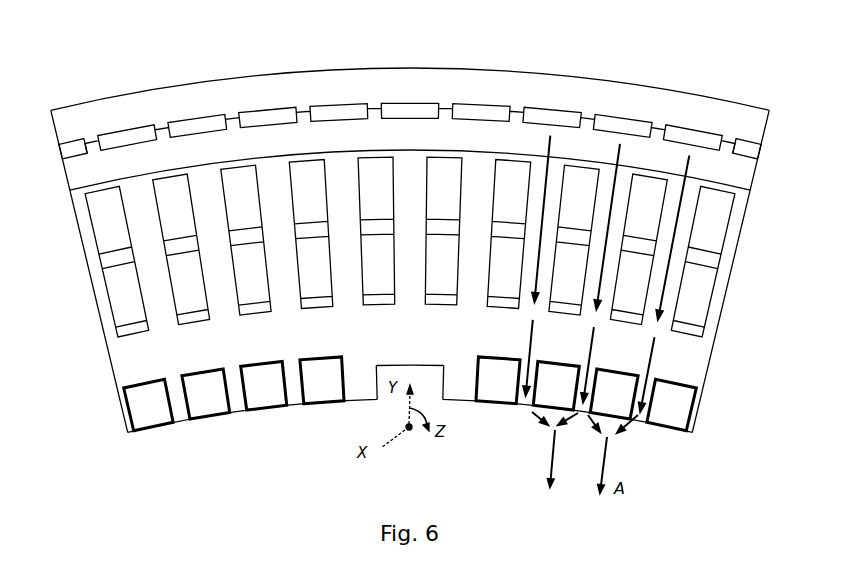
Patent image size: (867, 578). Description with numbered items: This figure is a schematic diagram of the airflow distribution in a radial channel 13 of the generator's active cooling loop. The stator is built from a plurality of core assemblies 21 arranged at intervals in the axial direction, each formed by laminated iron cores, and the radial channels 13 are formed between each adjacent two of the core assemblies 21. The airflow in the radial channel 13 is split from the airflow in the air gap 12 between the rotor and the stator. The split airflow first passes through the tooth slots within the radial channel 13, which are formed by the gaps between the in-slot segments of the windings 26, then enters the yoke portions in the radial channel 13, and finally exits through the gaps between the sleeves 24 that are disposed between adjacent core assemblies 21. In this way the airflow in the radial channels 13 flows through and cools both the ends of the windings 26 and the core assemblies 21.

The air gap 12 is at (304, 120).
The radial channels 13 is at (287, 285).
The core assemblies 21 is at (132, 352).
The sleeves 24 is at (302, 393).
The windings 26 is at (383, 285).